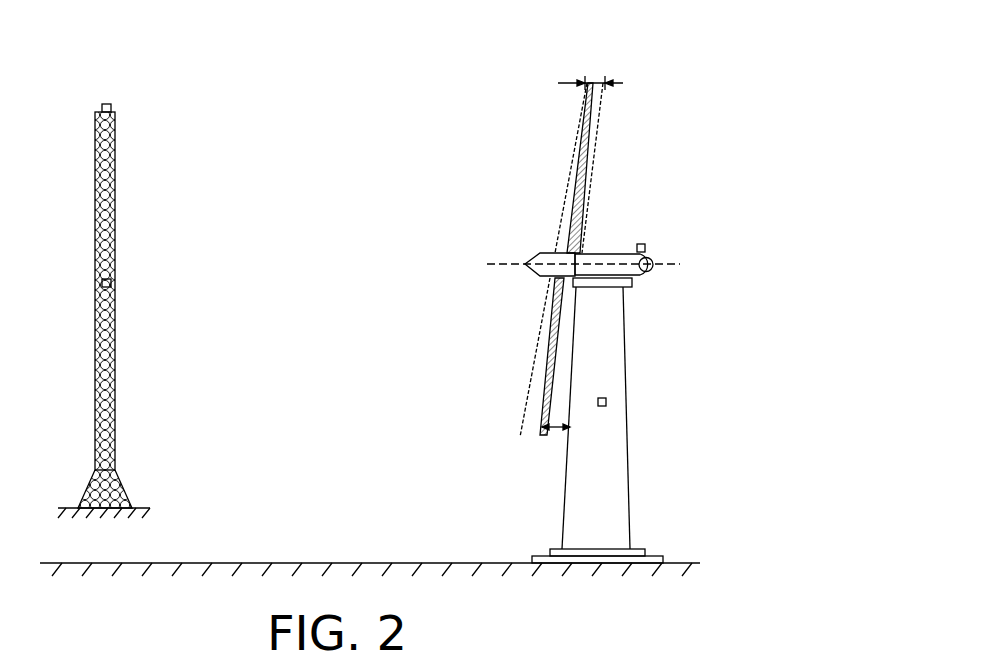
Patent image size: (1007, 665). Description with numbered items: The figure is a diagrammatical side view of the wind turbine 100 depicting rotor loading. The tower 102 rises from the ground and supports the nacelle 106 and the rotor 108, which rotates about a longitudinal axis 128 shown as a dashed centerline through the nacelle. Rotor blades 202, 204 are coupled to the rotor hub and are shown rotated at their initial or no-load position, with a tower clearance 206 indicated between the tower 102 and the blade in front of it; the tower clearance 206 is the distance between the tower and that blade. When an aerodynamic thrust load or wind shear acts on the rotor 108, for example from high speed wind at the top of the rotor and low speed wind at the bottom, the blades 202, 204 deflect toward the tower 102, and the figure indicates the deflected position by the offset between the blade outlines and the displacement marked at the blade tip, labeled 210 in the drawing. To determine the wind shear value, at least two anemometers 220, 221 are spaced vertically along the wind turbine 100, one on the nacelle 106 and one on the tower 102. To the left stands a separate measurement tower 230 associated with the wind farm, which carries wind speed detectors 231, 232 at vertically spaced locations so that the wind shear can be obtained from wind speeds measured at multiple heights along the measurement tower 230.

The wind turbine 100 is at (752, 49).
The tower 102 is at (628, 393).
The nacelle 106 is at (640, 246).
The rotor 108 is at (540, 257).
The longitudinal axis 128 is at (478, 268).
The rotor blade 202 is at (528, 390).
The rotor blade 204 is at (598, 140).
The tower clearance 206 is at (558, 428).
The blade tip deflection 210 is at (588, 80).
The anemometer 220 is at (645, 248).
The anemometer 221 is at (606, 402).
The measurement tower 230 is at (116, 196).
The wind speed detector 231 is at (111, 106).
The wind speed detector 232 is at (111, 283).